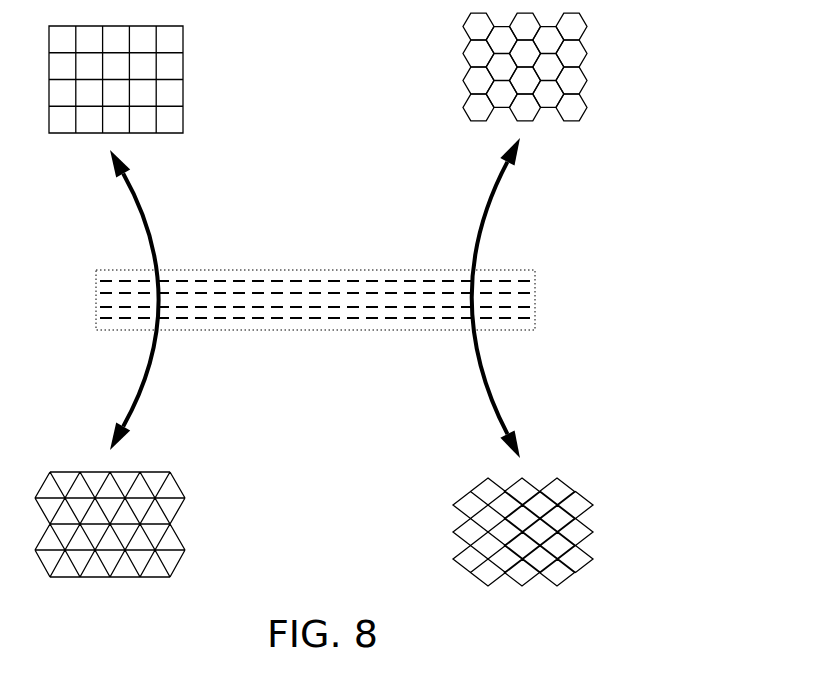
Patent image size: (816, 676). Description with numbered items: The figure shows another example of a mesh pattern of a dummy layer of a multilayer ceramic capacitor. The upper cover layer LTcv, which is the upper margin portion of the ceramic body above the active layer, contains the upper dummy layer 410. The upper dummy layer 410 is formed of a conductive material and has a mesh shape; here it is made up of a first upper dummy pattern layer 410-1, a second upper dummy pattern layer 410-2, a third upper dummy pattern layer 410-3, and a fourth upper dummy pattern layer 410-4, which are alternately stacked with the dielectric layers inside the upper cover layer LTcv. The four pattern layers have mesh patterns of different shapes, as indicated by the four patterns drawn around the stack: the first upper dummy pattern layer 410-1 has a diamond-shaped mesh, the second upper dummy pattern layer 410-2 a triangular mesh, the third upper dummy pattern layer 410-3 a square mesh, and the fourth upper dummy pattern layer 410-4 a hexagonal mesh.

The upper cover layer LTcv is at (316, 270).
The upper dummy layer 410 is at (414, 299).
The fourth upper dummy pattern layer 410-4 is at (518, 281).
The third upper dummy pattern layer 410-3 is at (518, 293).
The second upper dummy pattern layer 410-2 is at (518, 307).
The first upper dummy pattern layer 410-1 is at (518, 318).